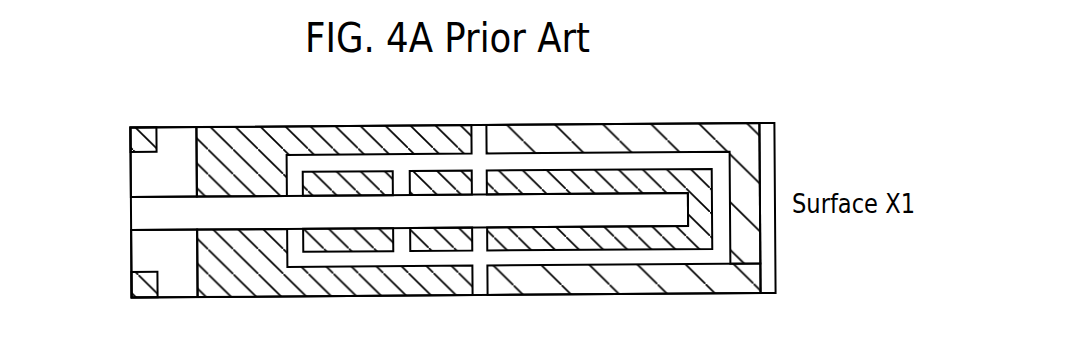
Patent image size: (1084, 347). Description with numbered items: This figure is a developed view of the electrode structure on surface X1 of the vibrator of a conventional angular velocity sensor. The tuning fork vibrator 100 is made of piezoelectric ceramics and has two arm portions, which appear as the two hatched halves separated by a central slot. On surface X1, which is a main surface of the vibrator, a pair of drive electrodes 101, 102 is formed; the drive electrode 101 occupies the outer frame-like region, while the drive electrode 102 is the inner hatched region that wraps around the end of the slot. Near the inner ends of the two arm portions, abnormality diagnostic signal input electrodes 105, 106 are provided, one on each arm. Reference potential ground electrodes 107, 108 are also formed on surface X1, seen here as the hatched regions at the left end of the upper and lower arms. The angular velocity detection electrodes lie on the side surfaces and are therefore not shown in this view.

The tuning fork vibrator 100 is at (118, 162).
The drive electrode 101 is at (630, 133).
The drive electrode 102 is at (547, 182).
The abnormality diagnostic signal input electrode 105 is at (357, 183).
The abnormality diagnostic signal input electrode 106 is at (347, 243).
The reference potential ground electrode 107 is at (223, 148).
The reference potential ground electrode 108 is at (242, 287).